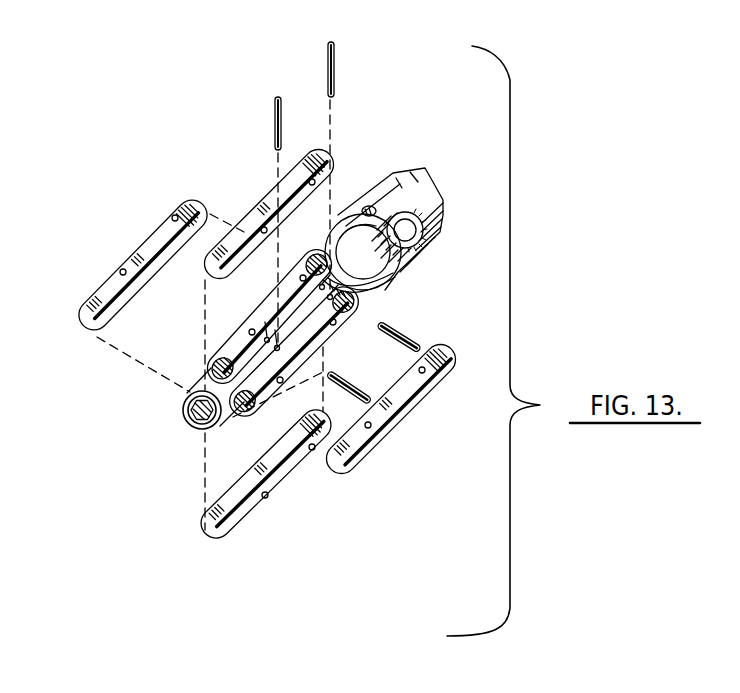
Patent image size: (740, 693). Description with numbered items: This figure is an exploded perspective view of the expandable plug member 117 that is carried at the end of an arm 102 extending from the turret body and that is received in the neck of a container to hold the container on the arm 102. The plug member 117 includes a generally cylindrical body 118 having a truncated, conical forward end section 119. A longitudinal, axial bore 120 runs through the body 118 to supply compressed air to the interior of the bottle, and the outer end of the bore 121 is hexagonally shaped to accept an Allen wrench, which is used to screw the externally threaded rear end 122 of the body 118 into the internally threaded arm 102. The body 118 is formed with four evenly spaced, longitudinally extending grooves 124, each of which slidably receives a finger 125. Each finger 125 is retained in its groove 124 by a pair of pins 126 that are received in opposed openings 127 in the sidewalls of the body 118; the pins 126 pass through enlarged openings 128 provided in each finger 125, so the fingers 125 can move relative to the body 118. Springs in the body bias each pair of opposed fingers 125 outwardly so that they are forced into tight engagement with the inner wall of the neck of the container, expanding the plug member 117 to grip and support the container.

The arm 102 is at (397, 187).
The expandable plug member 117 is at (144, 411).
The body 118 is at (238, 345).
The forward end section 119 is at (214, 406).
The axial bore 120 is at (198, 425).
The outer end of the bore 121 is at (205, 429).
The rear end 122 is at (383, 270).
The longitudinally extending groove 124 is at (218, 363).
The finger 125 is at (140, 250).
The pin 126 is at (277, 100).
The opening 127 is at (266, 336).
The enlarged opening 128 is at (172, 214).